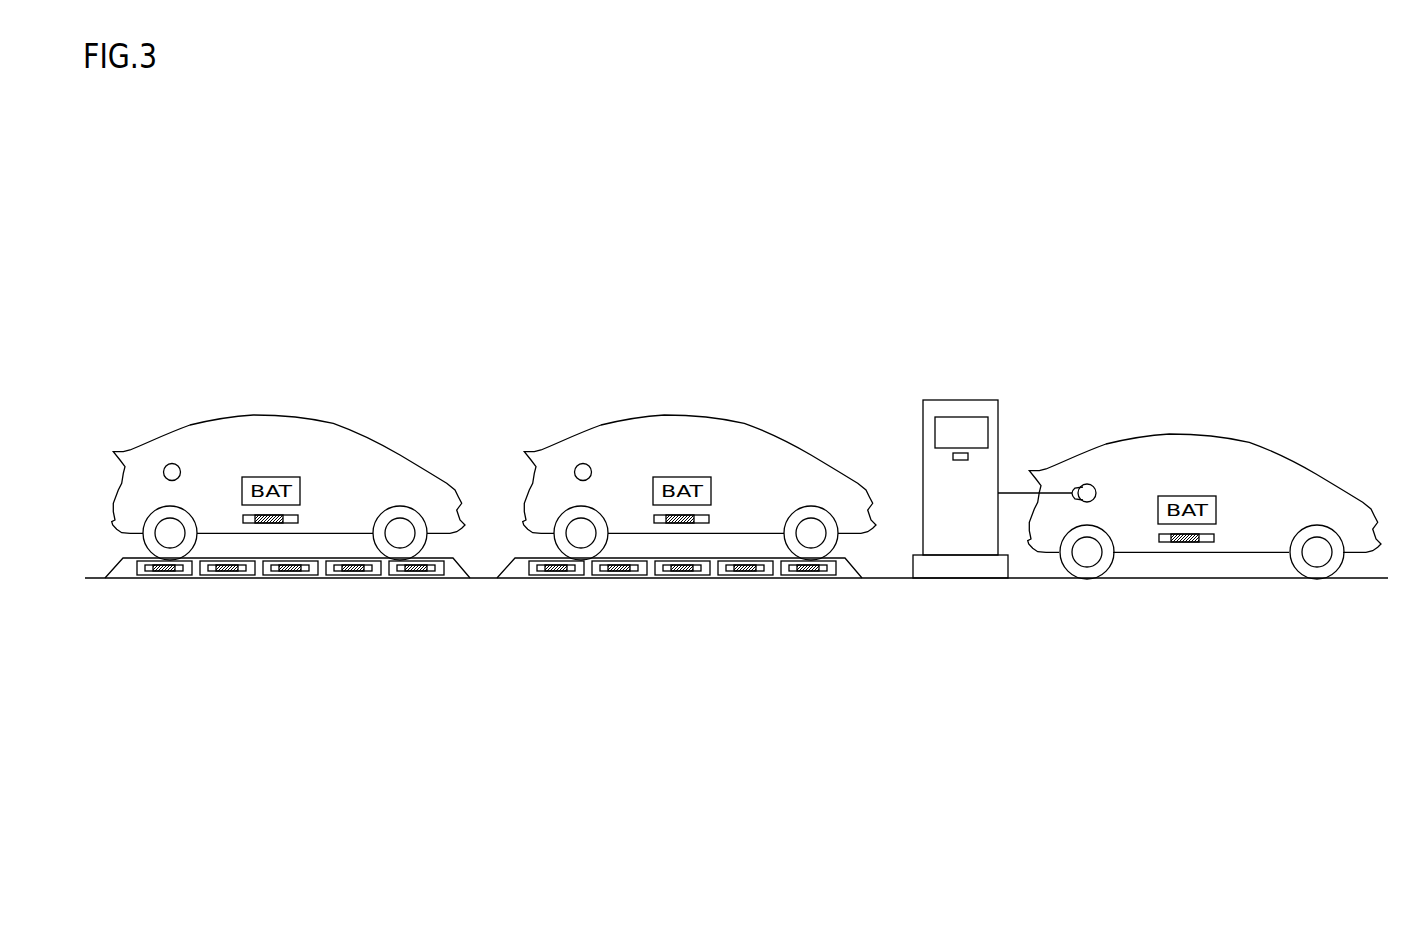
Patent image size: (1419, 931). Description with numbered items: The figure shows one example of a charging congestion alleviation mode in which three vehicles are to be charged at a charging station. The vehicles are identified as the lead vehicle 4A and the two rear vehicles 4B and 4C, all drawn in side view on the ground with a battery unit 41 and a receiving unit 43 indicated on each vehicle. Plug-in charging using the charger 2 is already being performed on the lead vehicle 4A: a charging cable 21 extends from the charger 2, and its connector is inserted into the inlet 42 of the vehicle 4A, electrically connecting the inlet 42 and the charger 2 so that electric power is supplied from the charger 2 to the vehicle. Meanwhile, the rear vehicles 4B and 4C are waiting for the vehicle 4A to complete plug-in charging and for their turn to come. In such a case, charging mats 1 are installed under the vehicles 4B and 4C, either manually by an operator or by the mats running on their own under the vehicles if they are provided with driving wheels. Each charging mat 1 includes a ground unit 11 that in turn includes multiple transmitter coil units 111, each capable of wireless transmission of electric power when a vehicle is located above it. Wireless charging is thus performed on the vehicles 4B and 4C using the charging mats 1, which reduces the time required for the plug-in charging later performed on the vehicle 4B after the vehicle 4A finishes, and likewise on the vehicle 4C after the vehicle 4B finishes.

The charging mat 1 is at (487, 604).
The ground unit 11 is at (452, 579).
The transmitter coil unit 111 is at (163, 579).
The charger 2 is at (972, 398).
The charging cable 21 is at (1015, 486).
The vehicle 4A is at (1204, 501).
The vehicle 4B is at (699, 483).
The vehicle 4C is at (177, 425).
The battery 41 is at (307, 464).
The inlet 42 is at (180, 464).
The power receiving unit 43 is at (299, 519).